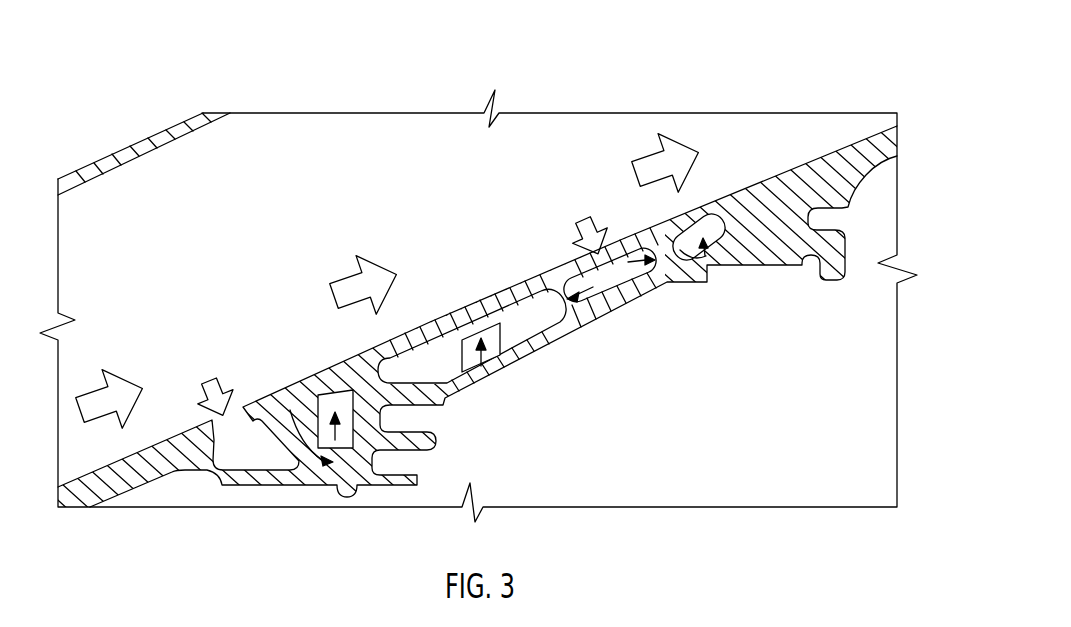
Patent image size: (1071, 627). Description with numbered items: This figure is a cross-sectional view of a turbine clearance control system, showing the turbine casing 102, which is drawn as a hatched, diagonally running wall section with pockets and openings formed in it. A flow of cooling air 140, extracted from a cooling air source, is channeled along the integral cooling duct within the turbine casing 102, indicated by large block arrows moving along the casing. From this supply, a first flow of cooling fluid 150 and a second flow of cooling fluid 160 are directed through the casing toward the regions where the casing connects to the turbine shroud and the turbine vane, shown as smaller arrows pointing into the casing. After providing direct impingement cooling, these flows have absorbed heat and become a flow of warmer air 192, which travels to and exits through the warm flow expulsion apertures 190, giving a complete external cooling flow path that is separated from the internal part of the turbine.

The turbine casing 102 is at (886, 143).
The flow of cooling air 140 is at (128, 372).
The first flow of cooling fluid 150 is at (228, 382).
The second flow of cooling fluid 160 is at (577, 236).
The warm flow expulsion apertures 190 is at (313, 413).
The flow of warmer air 192 is at (340, 424).